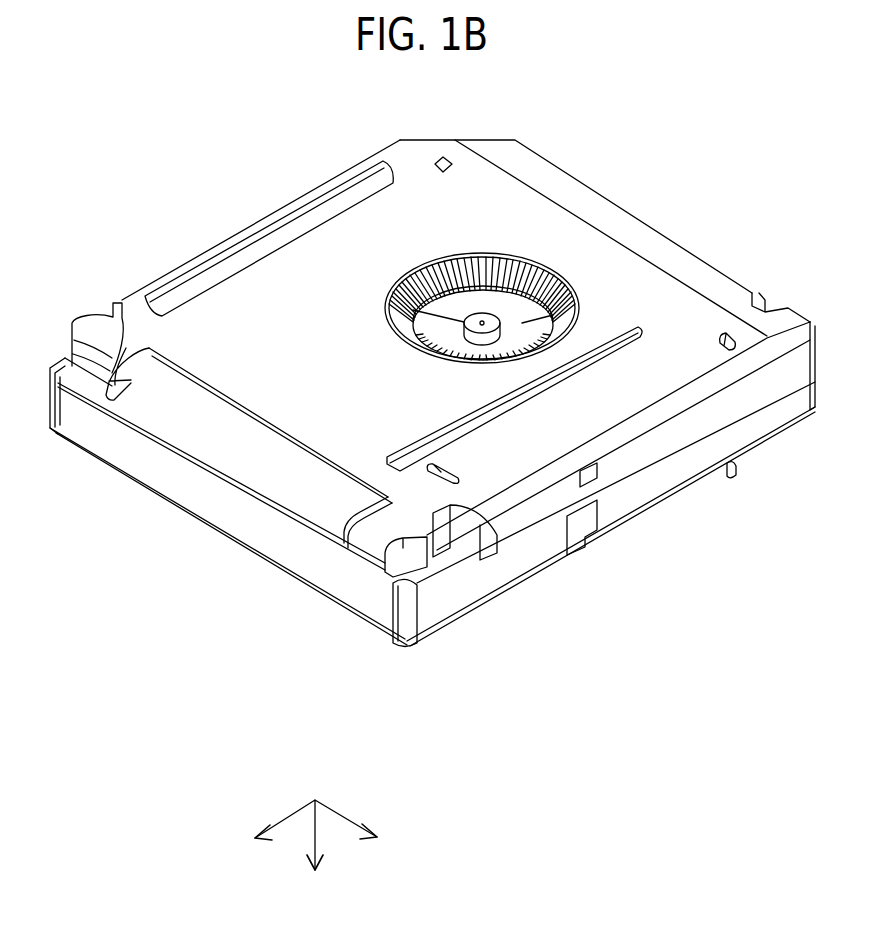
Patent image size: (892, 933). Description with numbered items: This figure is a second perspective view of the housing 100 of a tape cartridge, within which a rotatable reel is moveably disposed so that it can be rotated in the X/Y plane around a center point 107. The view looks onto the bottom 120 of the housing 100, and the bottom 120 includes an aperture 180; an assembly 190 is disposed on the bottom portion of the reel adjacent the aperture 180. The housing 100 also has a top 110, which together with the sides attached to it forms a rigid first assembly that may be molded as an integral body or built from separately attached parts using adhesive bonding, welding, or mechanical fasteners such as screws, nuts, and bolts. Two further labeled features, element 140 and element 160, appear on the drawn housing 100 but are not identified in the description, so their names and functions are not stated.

The housing 100 is at (407, 681).
The center point 107 is at (396, 300).
The top 110 is at (527, 583).
The bottom 120 is at (570, 300).
The side wall 140 is at (170, 487).
The side rail 160 is at (733, 437).
The aperture 180 is at (513, 253).
The assembly 190 is at (557, 250).